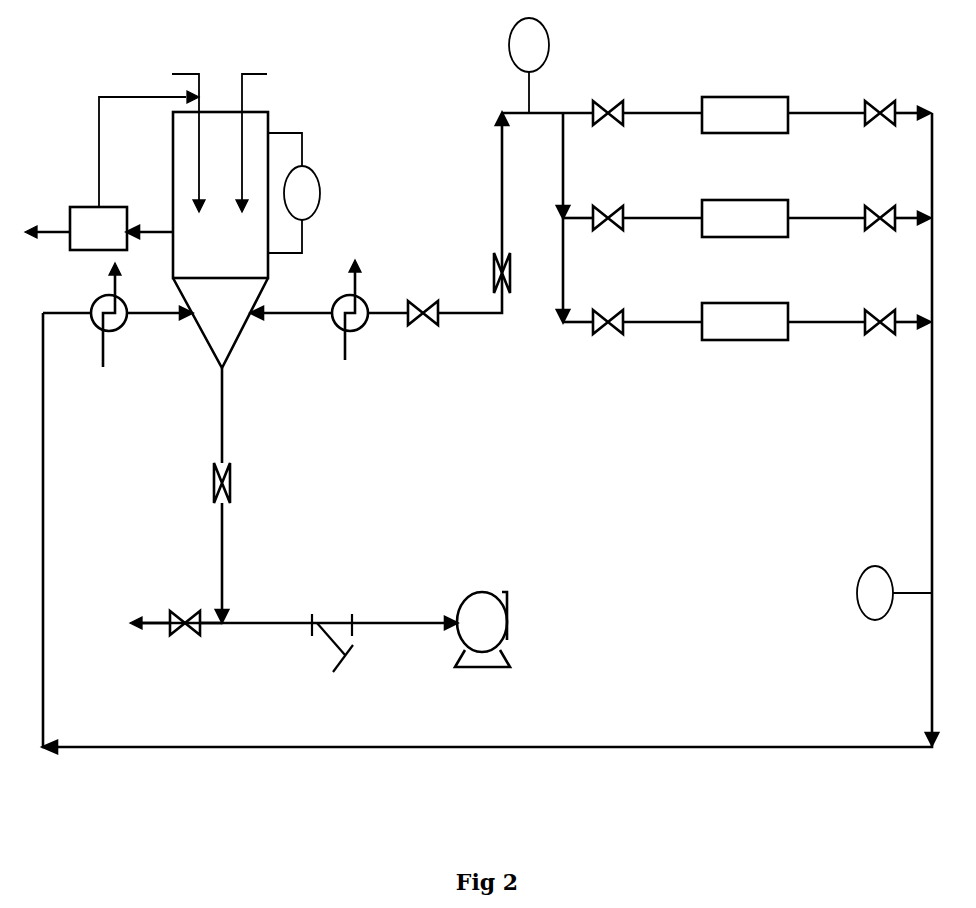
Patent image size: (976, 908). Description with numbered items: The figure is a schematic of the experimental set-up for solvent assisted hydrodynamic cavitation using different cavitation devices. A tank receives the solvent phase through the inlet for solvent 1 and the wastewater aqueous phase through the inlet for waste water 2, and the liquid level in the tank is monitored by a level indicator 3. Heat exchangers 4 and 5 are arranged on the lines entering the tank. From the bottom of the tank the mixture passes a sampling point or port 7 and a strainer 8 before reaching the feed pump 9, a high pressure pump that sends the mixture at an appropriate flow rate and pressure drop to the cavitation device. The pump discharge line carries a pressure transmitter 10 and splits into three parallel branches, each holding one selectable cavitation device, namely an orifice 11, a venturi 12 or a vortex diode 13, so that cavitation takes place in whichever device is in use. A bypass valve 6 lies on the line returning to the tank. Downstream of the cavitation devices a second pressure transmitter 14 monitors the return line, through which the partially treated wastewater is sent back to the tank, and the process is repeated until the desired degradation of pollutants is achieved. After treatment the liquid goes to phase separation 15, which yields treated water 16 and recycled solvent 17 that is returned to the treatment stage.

The inlet for solvent 1 is at (179, 137).
The inlet for waste water 2 is at (262, 137).
The level indicator 3 is at (294, 193).
The heat exchanger 4 is at (103, 315).
The heat exchanger 5 is at (339, 310).
The bypass valve 6 is at (423, 295).
The sampling point or port 7 is at (176, 665).
The strainer 8 is at (332, 667).
The feed pump 9 is at (482, 656).
The pressure transmitter 10 is at (529, 65).
The orifice cavitation device 11 is at (745, 115).
The venturi cavitation device 12 is at (745, 218).
The vortex diode cavitation device 13 is at (745, 321).
The pressure transmitter 14 is at (894, 593).
The phase separation 15 is at (98, 228).
The treated water 16 is at (45, 259).
The recycled solvent 17 is at (132, 149).